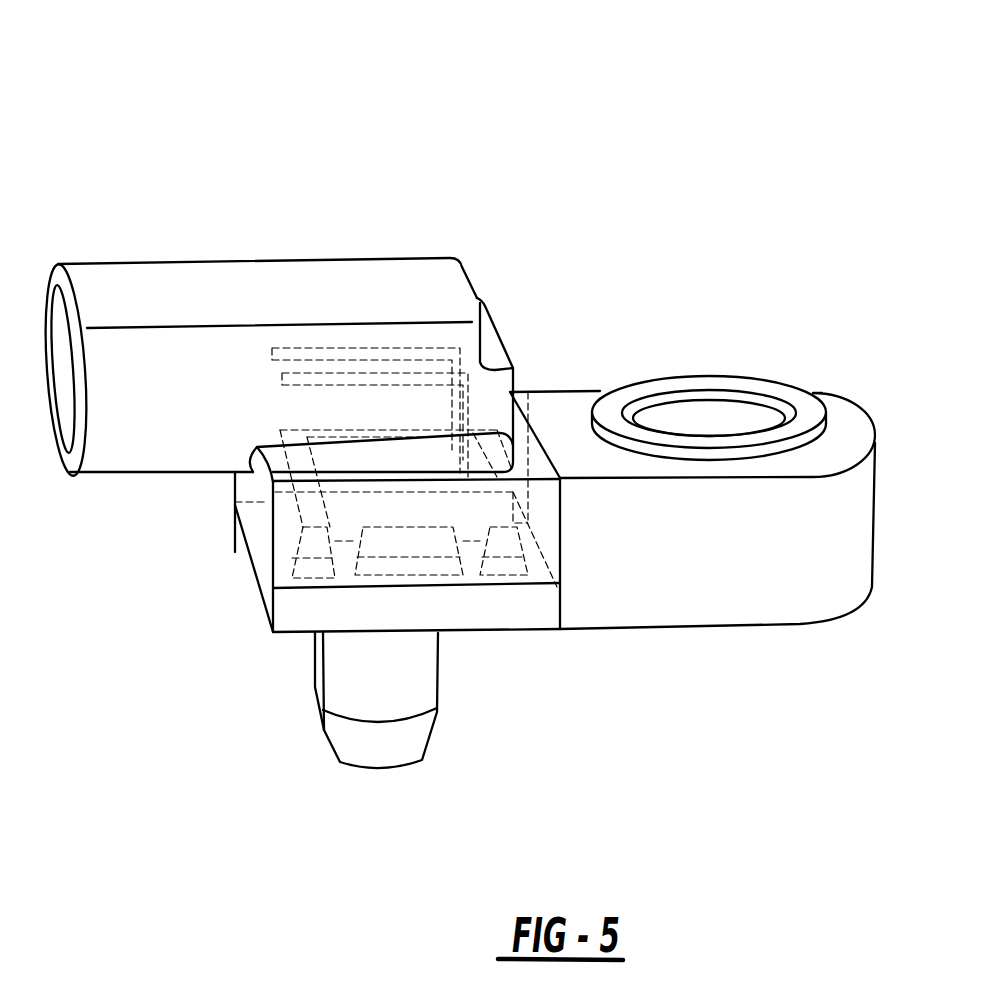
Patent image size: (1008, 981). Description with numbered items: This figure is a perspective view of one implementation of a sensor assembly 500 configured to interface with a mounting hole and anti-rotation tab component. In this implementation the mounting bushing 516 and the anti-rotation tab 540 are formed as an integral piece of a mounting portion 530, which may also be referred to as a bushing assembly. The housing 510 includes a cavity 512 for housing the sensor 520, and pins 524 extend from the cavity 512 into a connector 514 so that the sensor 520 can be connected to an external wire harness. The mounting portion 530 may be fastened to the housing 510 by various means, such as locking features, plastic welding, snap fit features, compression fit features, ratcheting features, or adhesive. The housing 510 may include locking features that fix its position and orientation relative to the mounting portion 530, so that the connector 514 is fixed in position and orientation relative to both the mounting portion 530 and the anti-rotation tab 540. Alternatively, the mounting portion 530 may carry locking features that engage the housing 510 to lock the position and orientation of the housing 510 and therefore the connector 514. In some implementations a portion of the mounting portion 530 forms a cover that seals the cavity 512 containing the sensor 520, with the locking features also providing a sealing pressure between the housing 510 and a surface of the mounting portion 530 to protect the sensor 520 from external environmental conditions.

The sensor assembly 500 is at (505, 121).
The housing 510 is at (245, 487).
The cavity 512 is at (538, 570).
The connector 514 is at (200, 278).
The mounting bushing 516 is at (743, 417).
The sensor 520 is at (325, 512).
The terminal pins 524 is at (397, 347).
The mounting portion 530 is at (778, 573).
The anti-rotation tab 540 is at (368, 690).